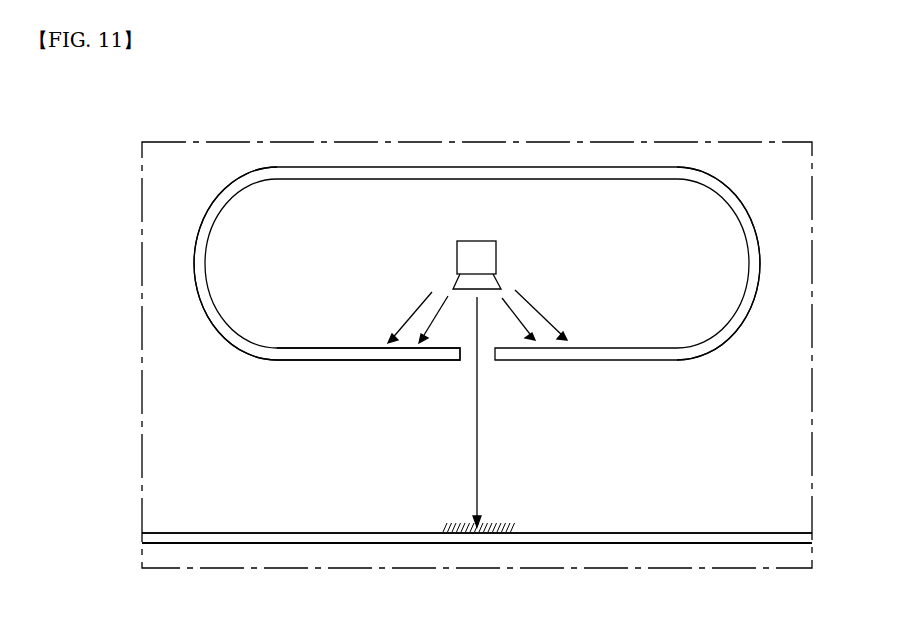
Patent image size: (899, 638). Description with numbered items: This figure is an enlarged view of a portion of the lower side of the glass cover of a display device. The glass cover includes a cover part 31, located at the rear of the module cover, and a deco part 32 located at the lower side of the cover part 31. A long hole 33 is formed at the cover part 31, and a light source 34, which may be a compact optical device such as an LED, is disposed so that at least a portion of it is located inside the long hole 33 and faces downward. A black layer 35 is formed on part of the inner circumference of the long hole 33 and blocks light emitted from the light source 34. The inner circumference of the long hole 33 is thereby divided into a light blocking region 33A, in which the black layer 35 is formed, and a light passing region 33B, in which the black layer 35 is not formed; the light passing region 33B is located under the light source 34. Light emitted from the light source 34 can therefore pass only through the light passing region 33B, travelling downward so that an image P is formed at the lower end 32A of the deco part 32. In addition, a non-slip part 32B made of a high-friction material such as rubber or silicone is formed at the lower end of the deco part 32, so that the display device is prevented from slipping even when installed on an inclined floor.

The cover part 31 is at (798, 300).
The deco part 32 is at (787, 465).
The lower end 32A is at (740, 534).
The non-slip part 32B is at (808, 538).
The long hole 33 is at (742, 205).
The light blocking region 33A is at (225, 338).
The light passing region 33B is at (462, 360).
The light source 34 is at (478, 240).
The black layer 35 is at (757, 264).
The image P is at (498, 534).